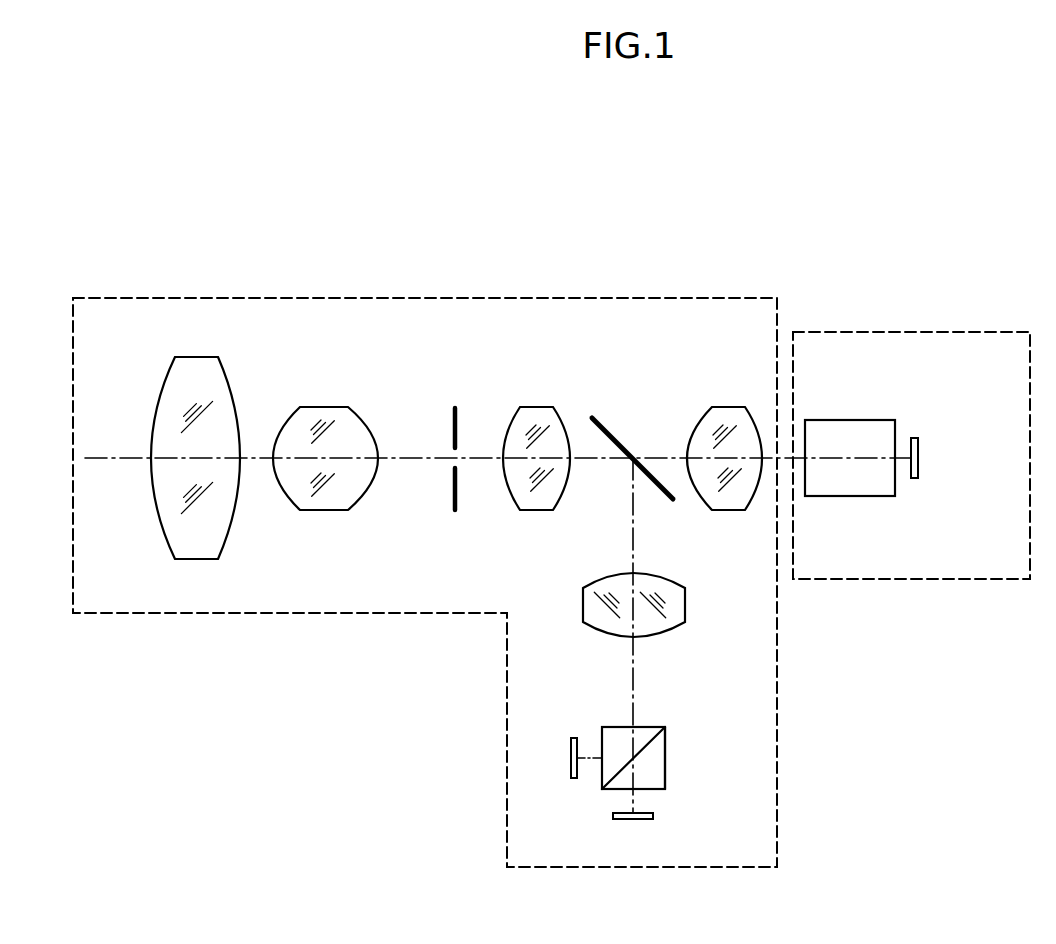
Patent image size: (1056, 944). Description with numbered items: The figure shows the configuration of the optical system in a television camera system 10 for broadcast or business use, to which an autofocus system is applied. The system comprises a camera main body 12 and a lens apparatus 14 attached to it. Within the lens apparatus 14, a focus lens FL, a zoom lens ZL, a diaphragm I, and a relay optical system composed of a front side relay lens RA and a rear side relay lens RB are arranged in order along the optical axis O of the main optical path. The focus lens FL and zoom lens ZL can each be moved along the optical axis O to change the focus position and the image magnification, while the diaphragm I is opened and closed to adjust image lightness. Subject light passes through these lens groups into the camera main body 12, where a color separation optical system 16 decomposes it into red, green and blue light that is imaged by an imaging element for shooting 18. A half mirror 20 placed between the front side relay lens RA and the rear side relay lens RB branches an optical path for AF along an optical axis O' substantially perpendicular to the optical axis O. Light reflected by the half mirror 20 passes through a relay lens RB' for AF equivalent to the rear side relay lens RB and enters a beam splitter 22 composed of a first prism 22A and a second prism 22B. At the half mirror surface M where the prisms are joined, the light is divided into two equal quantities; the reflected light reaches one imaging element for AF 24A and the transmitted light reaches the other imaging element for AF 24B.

The television camera system 10 is at (846, 170).
The camera main body 12 is at (975, 332).
The lens apparatus 14 is at (625, 298).
The color separation optical system 16 is at (848, 420).
The imaging element for shooting 18 is at (920, 456).
The half mirror 20 is at (607, 430).
The beam splitter 22 is at (711, 684).
The first prism 22A is at (612, 727).
The second prism 22B is at (666, 757).
The imaging element for AF 24A is at (573, 738).
The imaging element for AF 24B is at (655, 817).
The half mirror surface M is at (651, 741).
The focus lens FL is at (193, 357).
The zoom lens ZL is at (323, 407).
The diaphragm I is at (455, 408).
The front side relay lens RA is at (537, 407).
The rear side relay lens RB is at (724, 423).
The relay lens for AF RB' is at (675, 605).
The optical axis O is at (115, 431).
The optical axis O' is at (673, 534).